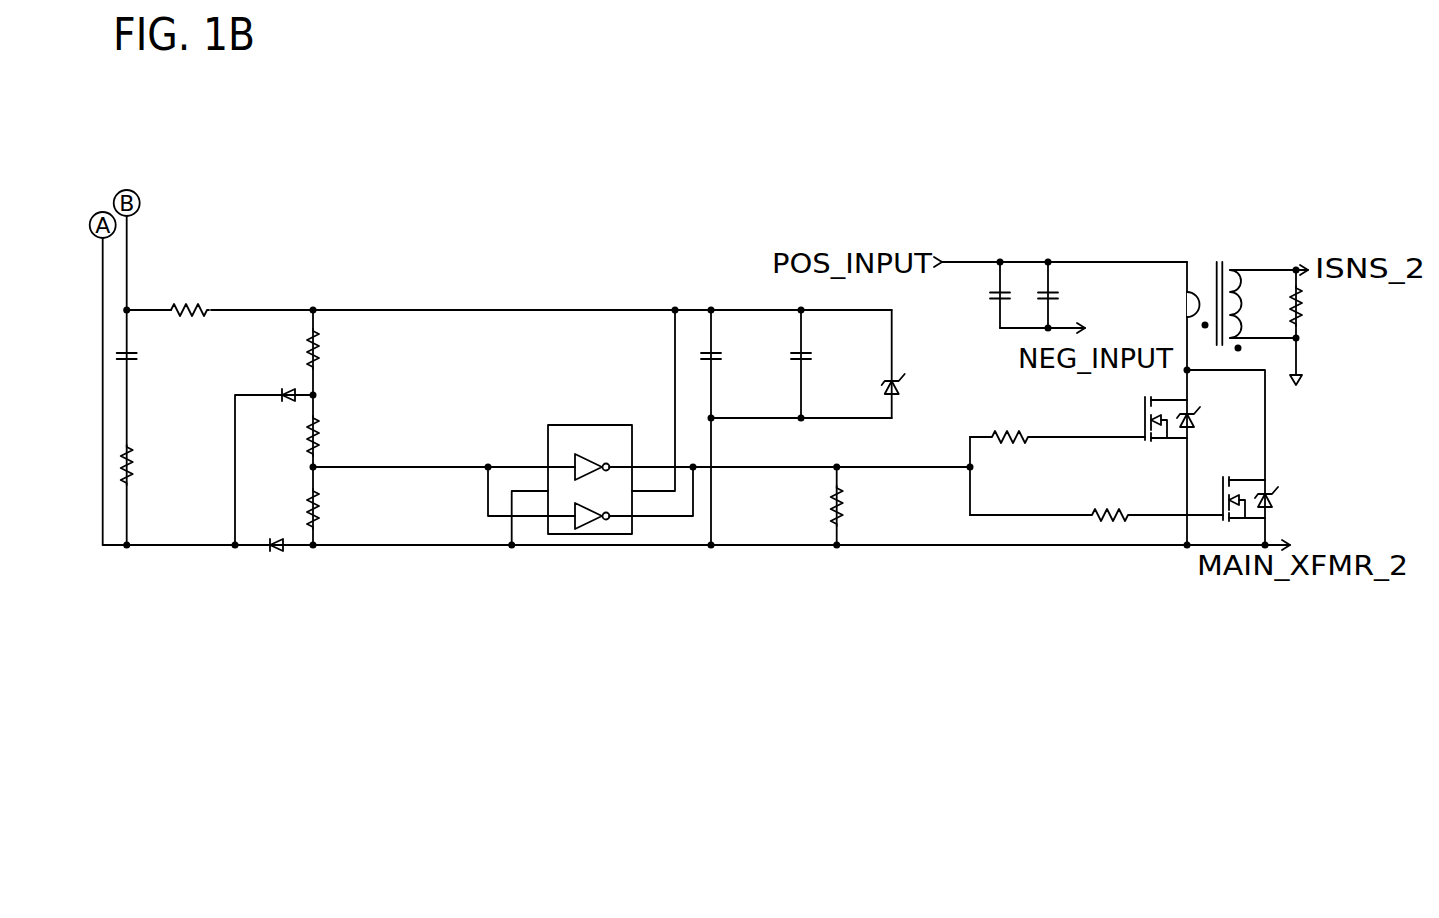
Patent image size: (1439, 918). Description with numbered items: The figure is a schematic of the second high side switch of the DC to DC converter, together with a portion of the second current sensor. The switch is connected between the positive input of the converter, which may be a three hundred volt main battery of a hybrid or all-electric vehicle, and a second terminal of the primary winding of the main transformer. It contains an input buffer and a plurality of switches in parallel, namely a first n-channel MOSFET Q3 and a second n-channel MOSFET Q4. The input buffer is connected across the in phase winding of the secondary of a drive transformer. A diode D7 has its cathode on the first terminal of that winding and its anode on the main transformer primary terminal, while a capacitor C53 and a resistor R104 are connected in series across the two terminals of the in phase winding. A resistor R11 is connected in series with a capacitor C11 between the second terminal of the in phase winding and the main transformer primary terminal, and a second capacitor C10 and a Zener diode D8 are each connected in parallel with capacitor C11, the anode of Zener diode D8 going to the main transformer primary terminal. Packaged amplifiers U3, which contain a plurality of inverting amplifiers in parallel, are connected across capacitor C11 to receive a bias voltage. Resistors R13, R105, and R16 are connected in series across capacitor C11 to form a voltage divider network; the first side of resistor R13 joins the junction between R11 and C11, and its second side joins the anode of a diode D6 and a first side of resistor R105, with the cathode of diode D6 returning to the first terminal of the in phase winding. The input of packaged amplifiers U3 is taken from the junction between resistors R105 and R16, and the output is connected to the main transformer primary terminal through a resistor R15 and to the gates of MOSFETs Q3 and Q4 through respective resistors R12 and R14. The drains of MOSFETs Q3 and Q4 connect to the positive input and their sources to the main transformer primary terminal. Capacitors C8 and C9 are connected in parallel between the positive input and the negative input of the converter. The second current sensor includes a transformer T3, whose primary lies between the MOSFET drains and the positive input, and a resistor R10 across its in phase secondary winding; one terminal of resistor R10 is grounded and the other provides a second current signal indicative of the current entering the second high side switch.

The resistor R11 is at (193, 294).
The capacitor C53 is at (156, 361).
The resistor R104 is at (164, 465).
The resistor R13 is at (338, 349).
The resistor R105 is at (349, 436).
The resistor R16 is at (339, 509).
The diode D6 is at (274, 381).
The diode D7 is at (265, 560).
The packaged amplifiers U3 is at (585, 465).
The capacitor C11 is at (734, 357).
The second capacitor C10 is at (828, 357).
The Zener diode D8 is at (908, 389).
The resistor R15 is at (863, 508).
The resistor R12 is at (1012, 454).
The resistor R14 is at (1113, 501).
The first n-channel MOSFET Q3 is at (1163, 406).
The second n-channel MOSFET Q4 is at (1270, 499).
The capacitor C9 is at (980, 296).
The capacitor C8 is at (1068, 296).
The transformer T3 is at (1214, 291).
The resistor R10 is at (1321, 306).